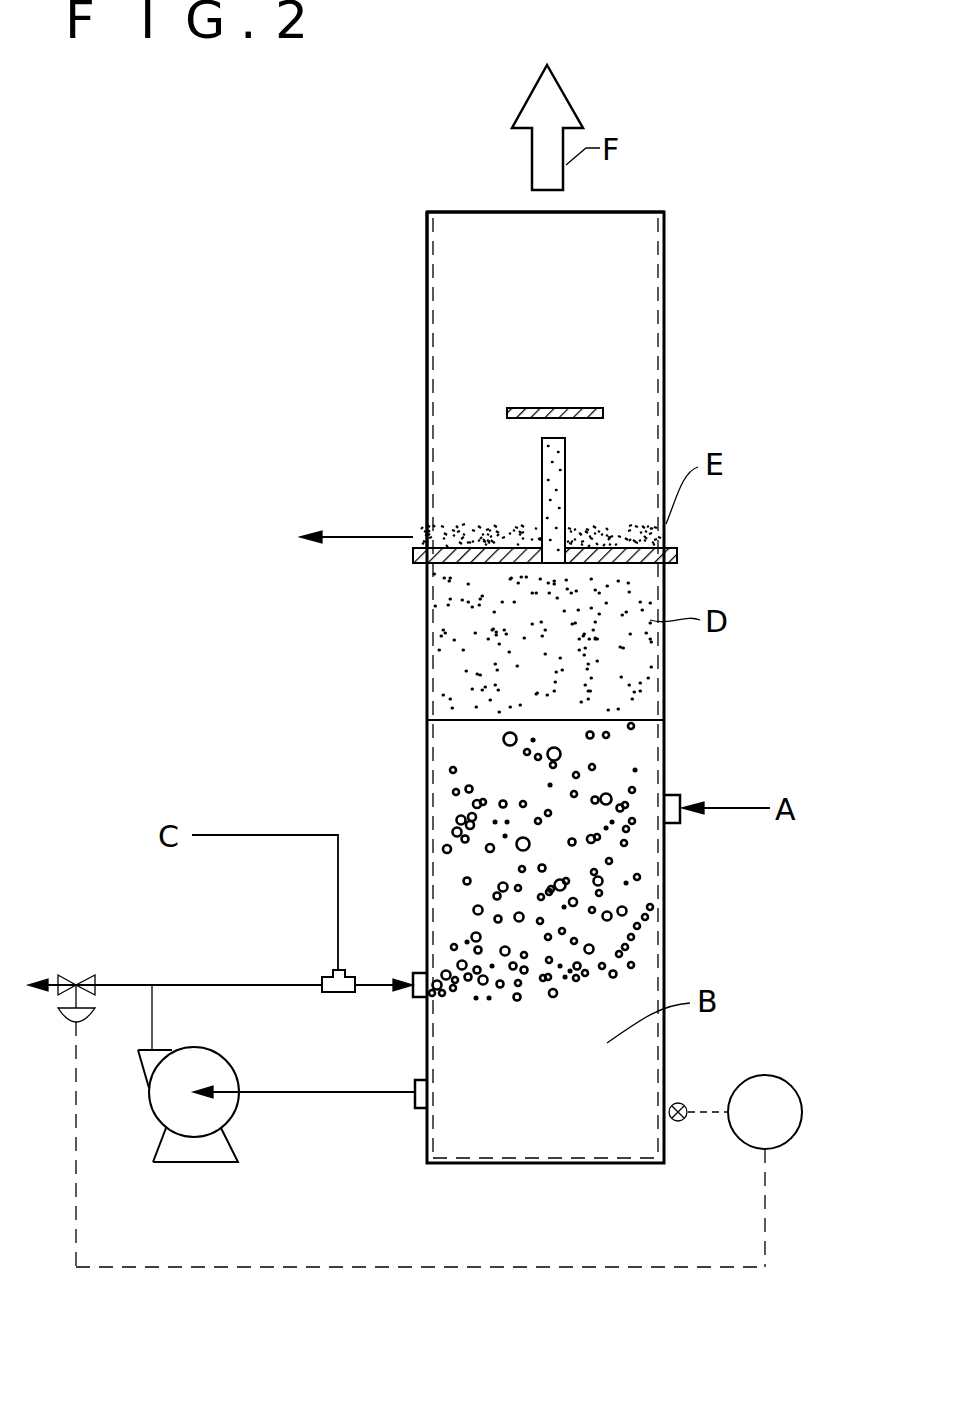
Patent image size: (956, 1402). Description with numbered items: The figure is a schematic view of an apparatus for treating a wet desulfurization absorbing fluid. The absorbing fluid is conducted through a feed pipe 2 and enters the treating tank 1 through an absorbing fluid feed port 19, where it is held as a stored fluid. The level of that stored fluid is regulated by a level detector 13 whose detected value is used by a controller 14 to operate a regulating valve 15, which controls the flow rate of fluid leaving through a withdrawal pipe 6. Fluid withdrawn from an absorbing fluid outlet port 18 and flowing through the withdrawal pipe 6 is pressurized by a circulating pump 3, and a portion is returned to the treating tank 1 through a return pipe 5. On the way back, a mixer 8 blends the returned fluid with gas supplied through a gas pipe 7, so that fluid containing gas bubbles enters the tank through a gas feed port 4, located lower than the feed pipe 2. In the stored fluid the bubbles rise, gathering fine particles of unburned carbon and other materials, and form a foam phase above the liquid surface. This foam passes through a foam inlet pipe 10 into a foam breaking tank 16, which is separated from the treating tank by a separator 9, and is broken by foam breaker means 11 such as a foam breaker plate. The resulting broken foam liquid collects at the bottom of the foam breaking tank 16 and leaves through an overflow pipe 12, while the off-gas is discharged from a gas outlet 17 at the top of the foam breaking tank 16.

The treating tank 1 is at (668, 955).
The feed pipe 2 is at (730, 804).
The circulating pump 3 is at (236, 1162).
The gas feed port 4 is at (413, 980).
The return pipe 5 is at (232, 983).
The withdrawal pipe 6 is at (323, 1095).
The gas pipe 7 is at (245, 834).
The mixer 8 is at (340, 993).
The separator 9 is at (465, 567).
The foam inlet pipe 10 is at (564, 468).
The foam breaker means 11 is at (592, 407).
The overflow pipe 12 is at (352, 535).
The level detector 13 is at (683, 1103).
The controller 14 is at (796, 1130).
The regulating valve 15 is at (85, 1023).
The foam breaking tank 16 is at (427, 322).
The gas outlet 17 is at (443, 211).
The absorbing fluid outlet port 18 is at (428, 1090).
The absorbing fluid feed port 19 is at (680, 823).